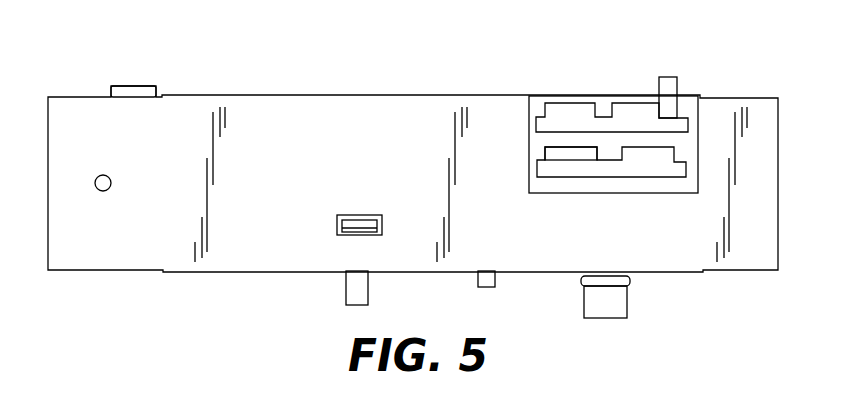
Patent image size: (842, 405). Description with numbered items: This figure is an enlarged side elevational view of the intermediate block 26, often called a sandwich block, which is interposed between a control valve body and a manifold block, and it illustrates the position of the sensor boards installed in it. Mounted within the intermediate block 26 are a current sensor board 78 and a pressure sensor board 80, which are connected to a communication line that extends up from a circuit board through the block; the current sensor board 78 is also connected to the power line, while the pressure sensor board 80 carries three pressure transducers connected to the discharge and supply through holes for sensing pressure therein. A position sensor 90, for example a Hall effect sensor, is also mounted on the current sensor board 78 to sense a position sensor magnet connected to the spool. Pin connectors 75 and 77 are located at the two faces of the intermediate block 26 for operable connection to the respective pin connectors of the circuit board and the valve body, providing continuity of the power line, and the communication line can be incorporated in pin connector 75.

The intermediate block 26 is at (117, 248).
The pin connector 75 is at (623, 298).
The pin connector 77 is at (667, 82).
The current sensor board 78 is at (662, 160).
The pressure sensor board 80 is at (683, 124).
The position sensor 90 is at (568, 150).